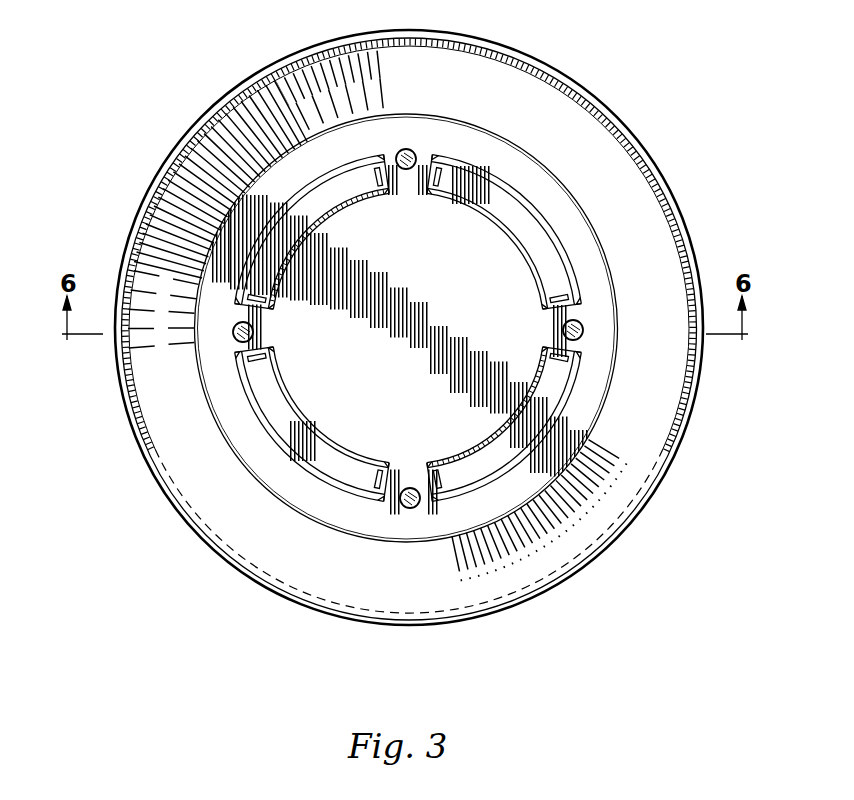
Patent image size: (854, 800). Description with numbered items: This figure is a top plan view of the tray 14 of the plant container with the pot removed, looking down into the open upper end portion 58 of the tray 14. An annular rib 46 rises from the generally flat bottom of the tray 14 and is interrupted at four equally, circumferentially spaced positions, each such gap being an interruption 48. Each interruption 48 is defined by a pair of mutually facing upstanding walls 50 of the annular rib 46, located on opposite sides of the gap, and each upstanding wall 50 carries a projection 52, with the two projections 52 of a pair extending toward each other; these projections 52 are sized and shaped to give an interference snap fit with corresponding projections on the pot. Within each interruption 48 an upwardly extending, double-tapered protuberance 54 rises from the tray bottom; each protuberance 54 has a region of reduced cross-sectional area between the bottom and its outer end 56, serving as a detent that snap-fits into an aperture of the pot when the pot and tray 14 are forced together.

The tray 14 is at (553, 66).
The open upper end portion 58 is at (628, 130).
The annular rib 46 is at (545, 236).
The interruption 48 is at (407, 188).
The upstanding walls 50 is at (386, 190).
The projection 52 is at (389, 162).
The double-tapered protuberance 54 is at (411, 150).
The outer end 56 is at (402, 150).